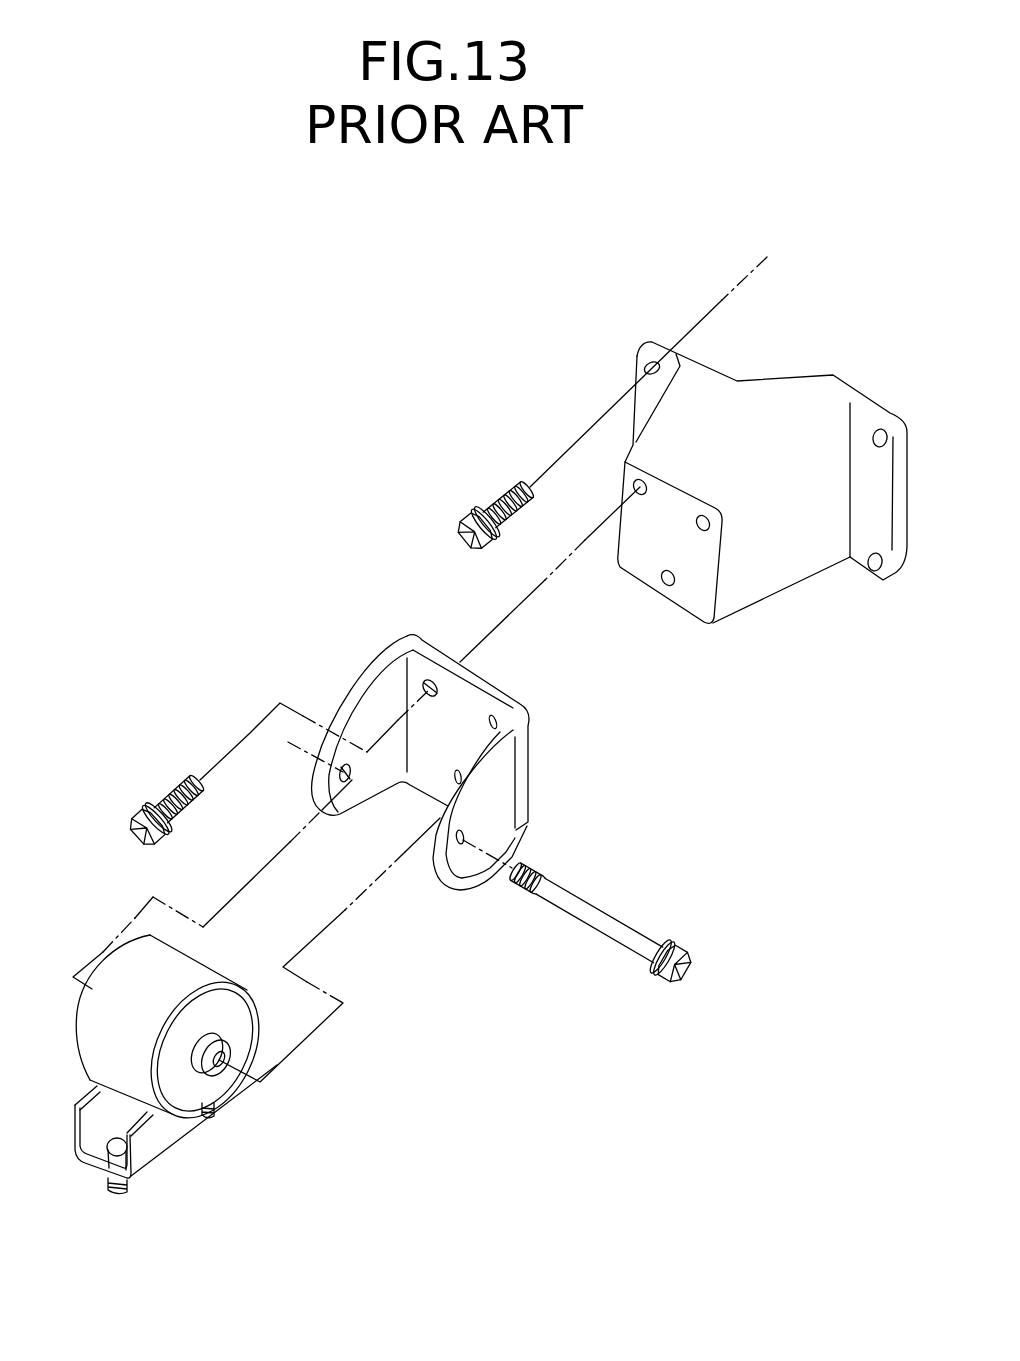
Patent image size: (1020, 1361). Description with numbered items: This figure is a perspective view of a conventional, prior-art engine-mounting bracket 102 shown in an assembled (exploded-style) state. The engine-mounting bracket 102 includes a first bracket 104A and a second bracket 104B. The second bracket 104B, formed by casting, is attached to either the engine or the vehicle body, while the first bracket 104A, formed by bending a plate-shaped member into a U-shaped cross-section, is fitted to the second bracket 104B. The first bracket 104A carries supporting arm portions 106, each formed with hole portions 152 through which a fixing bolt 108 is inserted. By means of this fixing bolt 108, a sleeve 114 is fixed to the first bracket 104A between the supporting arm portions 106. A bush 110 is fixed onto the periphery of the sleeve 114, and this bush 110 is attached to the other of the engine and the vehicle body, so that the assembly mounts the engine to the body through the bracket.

The engine-mounting bracket 102 is at (250, 300).
The second bracket 104B is at (800, 383).
The first bracket 104A is at (495, 812).
The supporting arm portions 106 is at (530, 859).
The hole portions 152 is at (465, 838).
The fixing bolt 108 is at (695, 943).
The bush 110 is at (167, 1035).
The sleeve 114 is at (222, 1094).